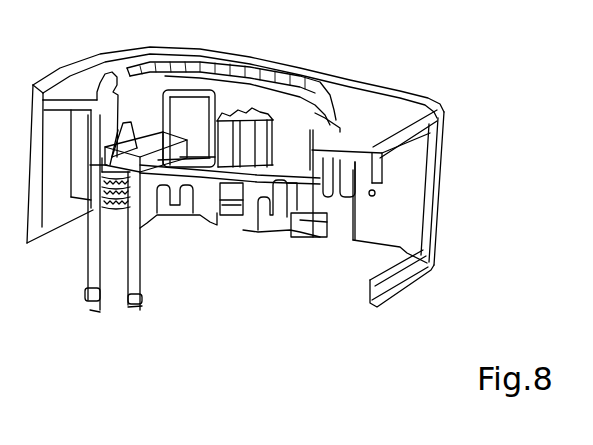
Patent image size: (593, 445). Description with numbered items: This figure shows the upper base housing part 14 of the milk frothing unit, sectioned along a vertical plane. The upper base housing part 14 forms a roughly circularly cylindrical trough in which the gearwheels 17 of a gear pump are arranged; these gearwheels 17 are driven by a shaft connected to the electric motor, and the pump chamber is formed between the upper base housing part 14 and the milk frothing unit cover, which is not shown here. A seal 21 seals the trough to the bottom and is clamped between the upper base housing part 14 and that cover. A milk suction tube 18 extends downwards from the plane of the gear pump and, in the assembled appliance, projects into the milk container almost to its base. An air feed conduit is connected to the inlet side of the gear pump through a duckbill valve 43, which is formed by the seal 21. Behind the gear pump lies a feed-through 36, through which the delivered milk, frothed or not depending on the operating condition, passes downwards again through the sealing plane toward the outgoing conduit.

The upper base housing part 14 is at (448, 105).
The gearwheels 17 is at (245, 150).
The milk suction tube 18 is at (100, 302).
The seal 21 is at (297, 183).
The feed-through 36 is at (278, 182).
The duckbill valve 43 is at (170, 152).